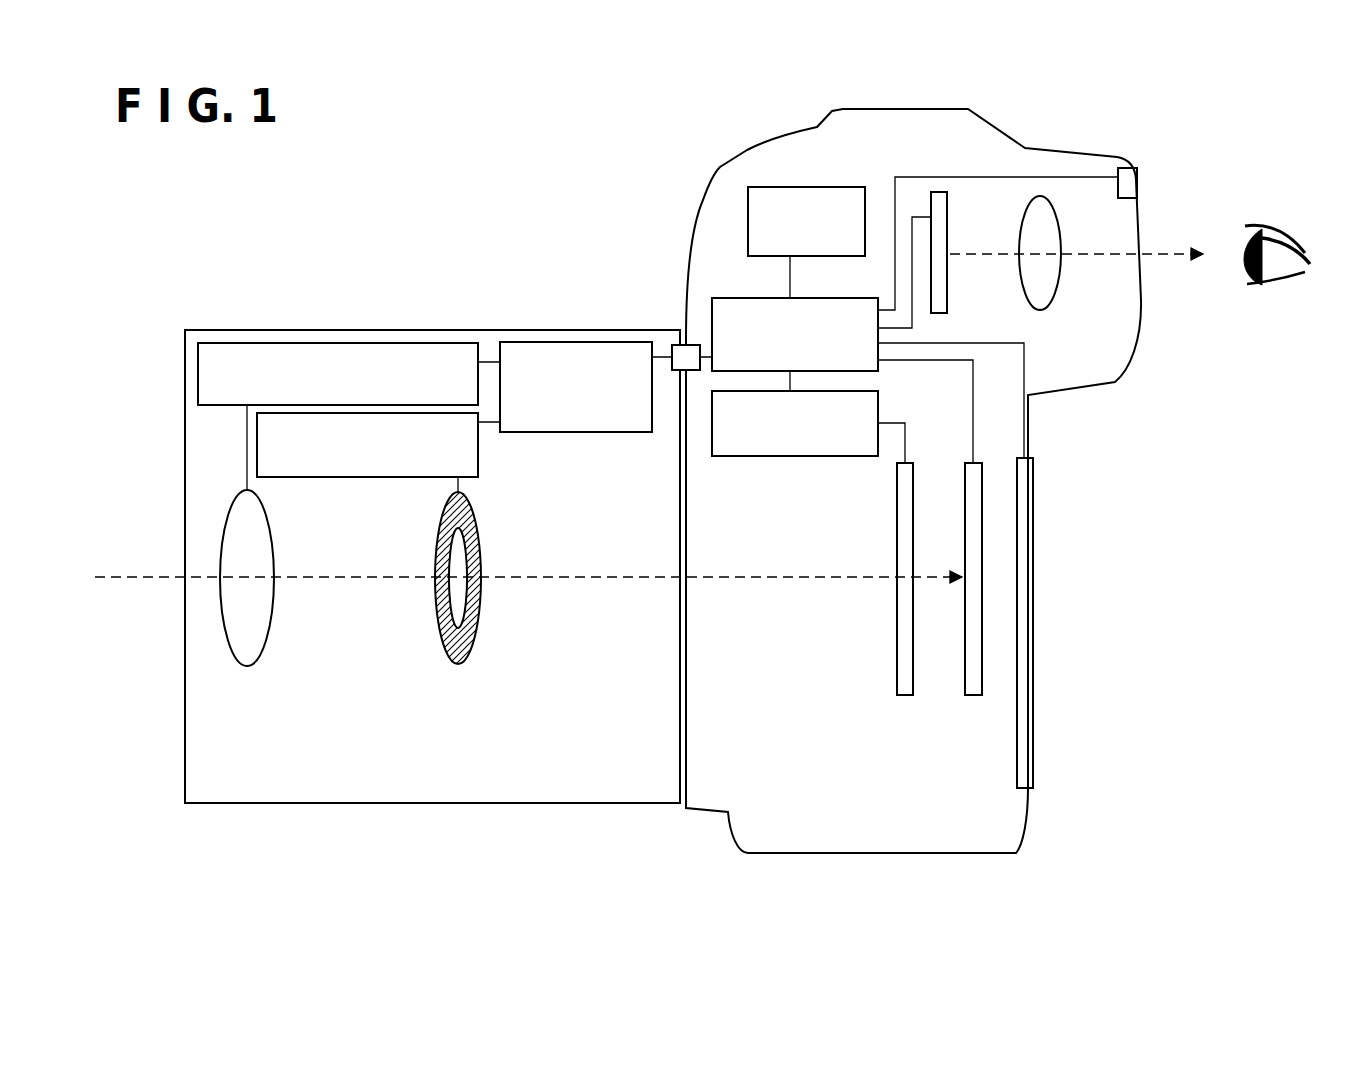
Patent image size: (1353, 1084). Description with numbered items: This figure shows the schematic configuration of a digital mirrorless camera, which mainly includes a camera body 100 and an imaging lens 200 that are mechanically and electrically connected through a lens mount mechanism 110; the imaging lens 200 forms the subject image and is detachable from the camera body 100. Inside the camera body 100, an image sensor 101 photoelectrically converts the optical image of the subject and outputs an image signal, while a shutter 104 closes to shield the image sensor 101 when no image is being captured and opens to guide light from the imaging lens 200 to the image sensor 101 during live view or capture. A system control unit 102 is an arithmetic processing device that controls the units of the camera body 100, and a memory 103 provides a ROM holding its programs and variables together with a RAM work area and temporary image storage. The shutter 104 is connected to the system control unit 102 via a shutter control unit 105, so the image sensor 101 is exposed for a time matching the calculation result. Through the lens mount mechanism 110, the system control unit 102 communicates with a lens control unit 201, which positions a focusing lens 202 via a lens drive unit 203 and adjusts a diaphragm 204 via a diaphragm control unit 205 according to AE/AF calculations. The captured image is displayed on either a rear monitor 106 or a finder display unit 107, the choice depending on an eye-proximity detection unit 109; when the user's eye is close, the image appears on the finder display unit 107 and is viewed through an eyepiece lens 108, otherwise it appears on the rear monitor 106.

The camera body 100 is at (687, 855).
The image sensor 101 is at (972, 695).
The system control unit 102 is at (792, 298).
The memory 103 is at (777, 187).
The shutter 104 is at (897, 672).
The shutter control unit 105 is at (775, 456).
The rear monitor 106 is at (1033, 672).
The finder display unit 107 is at (938, 192).
The eyepiece lens 108 is at (1040, 196).
The eye-proximity detection unit 109 is at (1131, 168).
The lens mount mechanism 110 is at (677, 345).
The imaging lens 200 is at (678, 855).
The lens control unit 201 is at (563, 342).
The focusing lens 202 is at (247, 666).
The lens drive unit 203 is at (273, 343).
The diaphragm 204 is at (458, 664).
The diaphragm control unit 205 is at (387, 477).